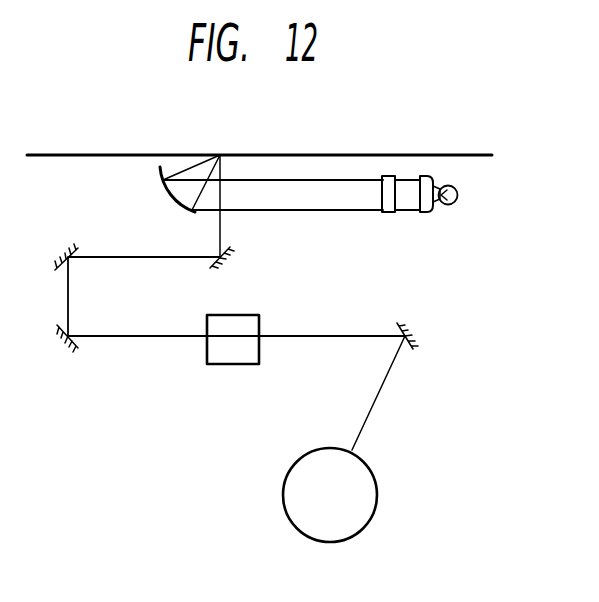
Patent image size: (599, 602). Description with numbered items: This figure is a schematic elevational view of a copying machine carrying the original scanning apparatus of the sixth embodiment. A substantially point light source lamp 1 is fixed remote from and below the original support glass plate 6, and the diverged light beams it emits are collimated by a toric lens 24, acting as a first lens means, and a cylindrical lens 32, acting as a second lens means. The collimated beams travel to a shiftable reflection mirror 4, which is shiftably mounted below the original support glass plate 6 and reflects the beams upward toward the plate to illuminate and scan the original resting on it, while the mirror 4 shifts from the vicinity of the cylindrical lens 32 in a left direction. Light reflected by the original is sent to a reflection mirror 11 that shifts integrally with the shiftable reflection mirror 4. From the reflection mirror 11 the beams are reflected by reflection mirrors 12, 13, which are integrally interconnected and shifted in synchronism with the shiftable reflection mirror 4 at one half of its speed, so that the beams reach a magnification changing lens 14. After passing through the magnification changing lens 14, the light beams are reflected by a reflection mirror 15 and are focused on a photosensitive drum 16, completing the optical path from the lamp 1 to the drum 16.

The light source lamp 1 is at (453, 204).
The shiftable reflection mirror 4 is at (162, 195).
The original support glass plate 6 is at (295, 155).
The reflection mirror 11 is at (236, 262).
The reflection mirror 12 is at (76, 251).
The reflection mirror 13 is at (78, 345).
The magnification changing lens 14 is at (246, 365).
The reflection mirror 15 is at (410, 346).
The photosensitive drum 16 is at (380, 488).
The toric lens 24 is at (445, 186).
The cylindrical lens 32 is at (388, 212).